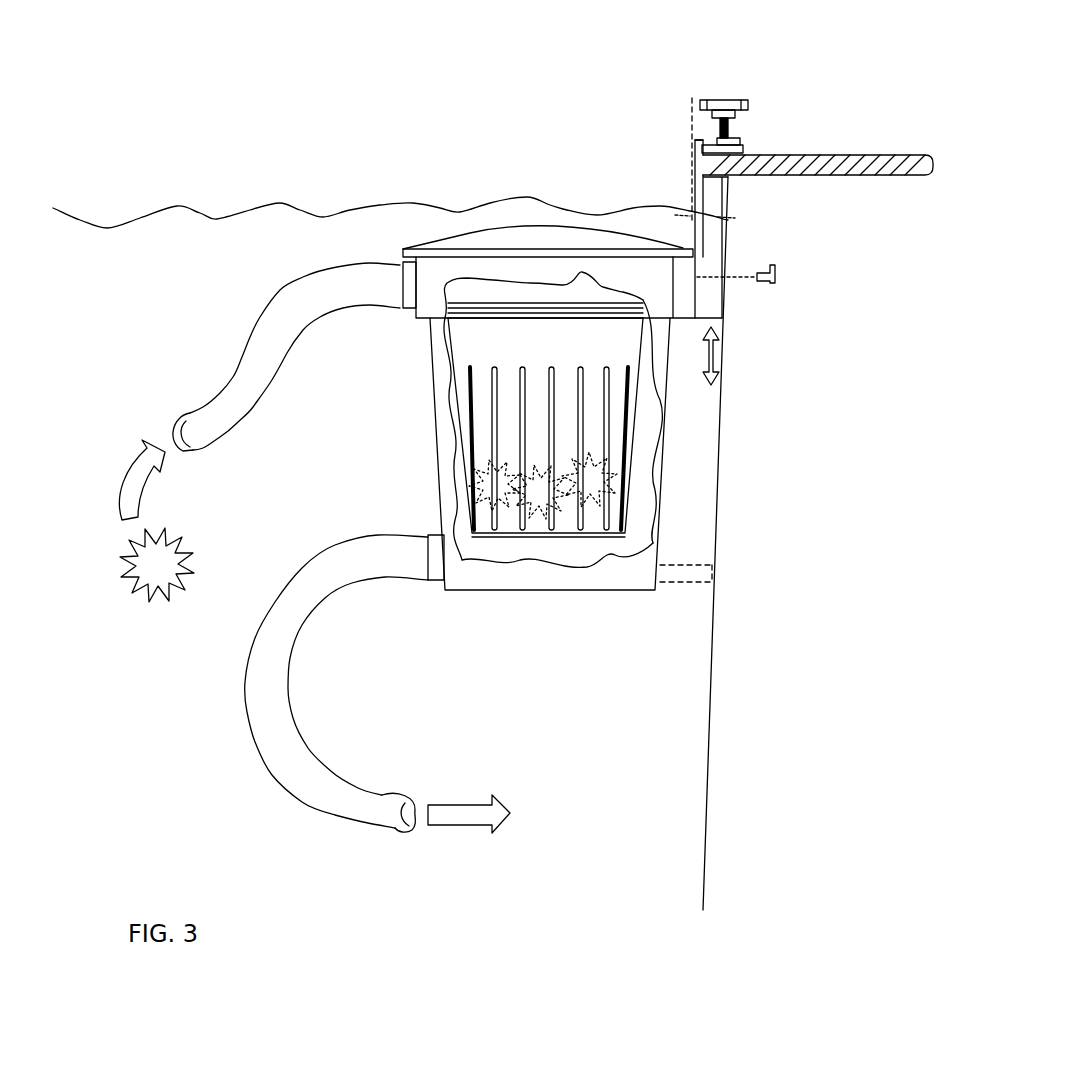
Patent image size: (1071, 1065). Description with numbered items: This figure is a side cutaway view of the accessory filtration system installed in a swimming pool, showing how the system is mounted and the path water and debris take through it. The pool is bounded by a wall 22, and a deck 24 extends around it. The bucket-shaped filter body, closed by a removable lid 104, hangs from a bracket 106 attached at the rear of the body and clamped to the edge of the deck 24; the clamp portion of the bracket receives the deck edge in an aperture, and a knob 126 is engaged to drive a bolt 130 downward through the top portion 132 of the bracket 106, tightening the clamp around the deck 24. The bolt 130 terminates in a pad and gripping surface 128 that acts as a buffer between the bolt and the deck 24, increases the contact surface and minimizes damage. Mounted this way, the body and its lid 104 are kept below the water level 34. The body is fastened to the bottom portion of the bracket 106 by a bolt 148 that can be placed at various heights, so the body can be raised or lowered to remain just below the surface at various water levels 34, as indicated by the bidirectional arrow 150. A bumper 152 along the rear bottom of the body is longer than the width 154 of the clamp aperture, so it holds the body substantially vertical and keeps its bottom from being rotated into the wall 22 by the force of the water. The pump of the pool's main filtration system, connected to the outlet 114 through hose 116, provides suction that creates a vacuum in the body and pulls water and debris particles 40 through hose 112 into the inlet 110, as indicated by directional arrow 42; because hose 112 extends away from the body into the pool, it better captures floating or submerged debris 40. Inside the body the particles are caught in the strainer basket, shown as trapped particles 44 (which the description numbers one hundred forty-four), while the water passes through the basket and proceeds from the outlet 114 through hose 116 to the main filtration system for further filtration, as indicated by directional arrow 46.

The wall 22 is at (700, 840).
The deck 24 is at (870, 153).
The water level 34 is at (177, 207).
The debris particles 40 is at (125, 577).
The directional arrow 42 is at (113, 492).
The filter basket 44 is at (472, 493).
The directional arrow 46 is at (470, 812).
The removable lid 104 is at (515, 238).
The bracket 106 is at (712, 248).
The inlet 110 is at (400, 312).
The hose 112 is at (190, 403).
The outlet 114 is at (430, 583).
The hose 116 is at (377, 830).
The knob 126 is at (728, 98).
The pad and gripping surface 128 is at (750, 152).
The bolt 130 is at (735, 138).
The top portion of bracket 132 is at (697, 148).
The bolt 148 is at (775, 283).
The bidirectional arrow 150 is at (718, 362).
The bumper 152 is at (680, 572).
The width of the aperture 154 is at (765, 217).